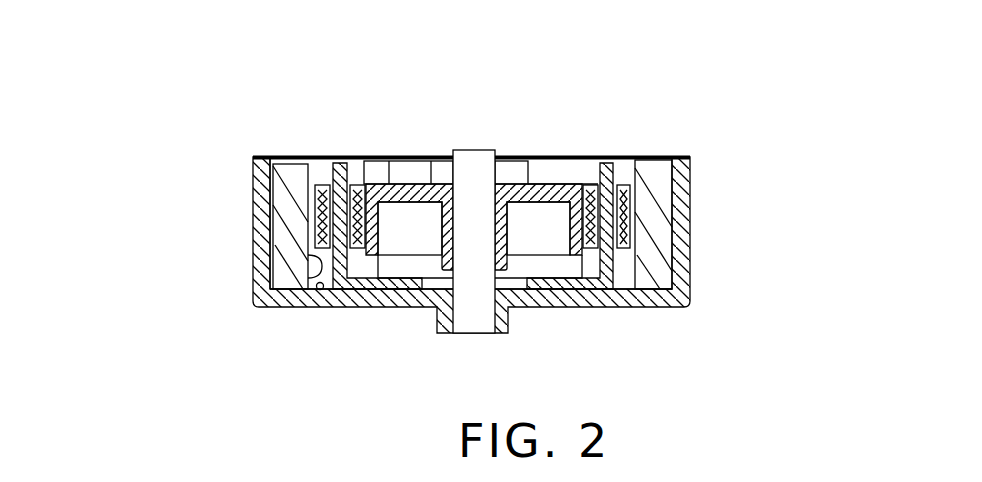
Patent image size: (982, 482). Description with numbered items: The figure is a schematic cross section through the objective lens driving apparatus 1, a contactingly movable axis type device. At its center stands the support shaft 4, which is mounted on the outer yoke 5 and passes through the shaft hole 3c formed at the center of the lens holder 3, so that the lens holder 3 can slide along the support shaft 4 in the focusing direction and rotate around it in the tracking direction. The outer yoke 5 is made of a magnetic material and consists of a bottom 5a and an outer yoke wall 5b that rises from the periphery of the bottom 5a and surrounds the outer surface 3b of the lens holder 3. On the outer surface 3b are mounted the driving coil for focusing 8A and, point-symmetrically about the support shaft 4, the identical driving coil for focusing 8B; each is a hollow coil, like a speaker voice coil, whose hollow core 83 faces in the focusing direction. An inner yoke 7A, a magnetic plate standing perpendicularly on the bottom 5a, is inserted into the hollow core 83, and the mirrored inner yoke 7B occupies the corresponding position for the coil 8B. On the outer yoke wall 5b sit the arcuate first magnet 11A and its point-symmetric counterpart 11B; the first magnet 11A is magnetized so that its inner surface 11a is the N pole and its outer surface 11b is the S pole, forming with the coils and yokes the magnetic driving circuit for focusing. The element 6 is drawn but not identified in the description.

The objective lens driving apparatus 1 is at (453, 210).
The lens holder 3 is at (552, 177).
The outer surface 3b is at (395, 309).
The shaft hole 3c is at (460, 192).
The support shaft 4 is at (479, 195).
The outer yoke 5 is at (683, 202).
The bottom 5a is at (368, 245).
The outer yoke wall 5b is at (283, 162).
The yoke 6 is at (268, 222).
The inner yoke 7A is at (343, 163).
The right yoke plate 7B is at (607, 165).
The driving coil for focusing 8A is at (318, 187).
The driving coil for focusing 8B is at (623, 187).
The hollow core 83 is at (353, 183).
The first magnet 11A is at (290, 258).
The first magnet 11B is at (653, 240).
The inner surface 11a is at (300, 293).
The outer surface 11b is at (275, 270).